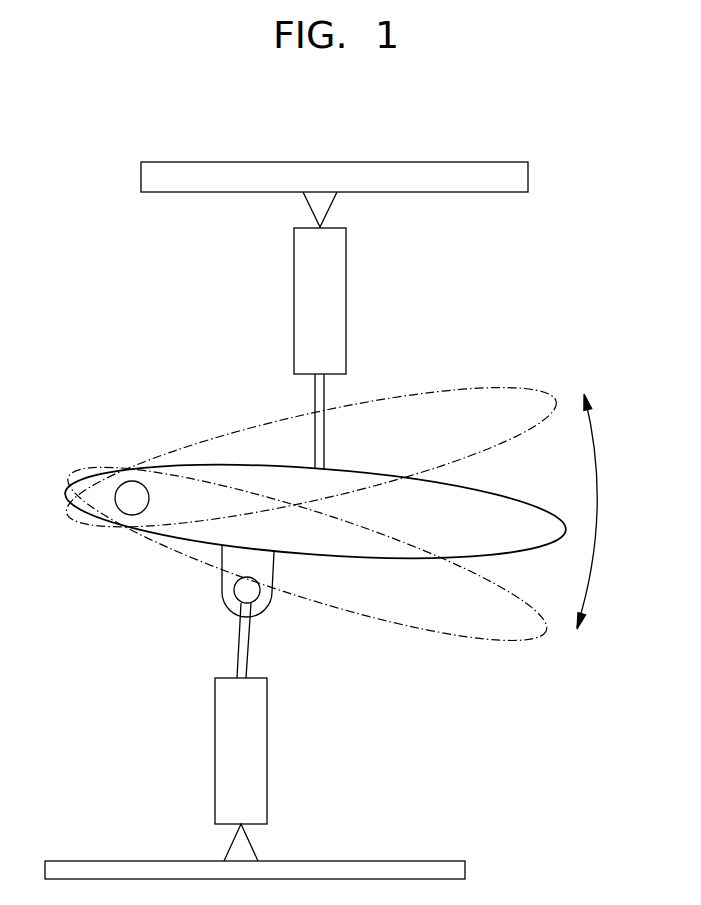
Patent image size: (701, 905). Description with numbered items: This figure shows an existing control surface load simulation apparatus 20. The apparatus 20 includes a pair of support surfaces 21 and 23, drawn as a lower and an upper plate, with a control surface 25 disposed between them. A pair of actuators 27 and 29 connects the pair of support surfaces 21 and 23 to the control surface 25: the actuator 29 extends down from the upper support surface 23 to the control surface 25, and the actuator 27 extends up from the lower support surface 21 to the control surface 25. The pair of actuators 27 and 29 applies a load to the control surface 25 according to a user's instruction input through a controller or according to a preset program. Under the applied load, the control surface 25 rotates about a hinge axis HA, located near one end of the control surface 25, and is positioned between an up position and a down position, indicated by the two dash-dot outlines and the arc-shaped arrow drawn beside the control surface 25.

The control surface load simulation apparatus 20 is at (112, 130).
The support surface 21 is at (465, 871).
The support surface 23 is at (528, 174).
The control surface 25 is at (527, 503).
The actuator 27 is at (267, 766).
The actuator 29 is at (346, 300).
The hinge axis HA is at (132, 490).